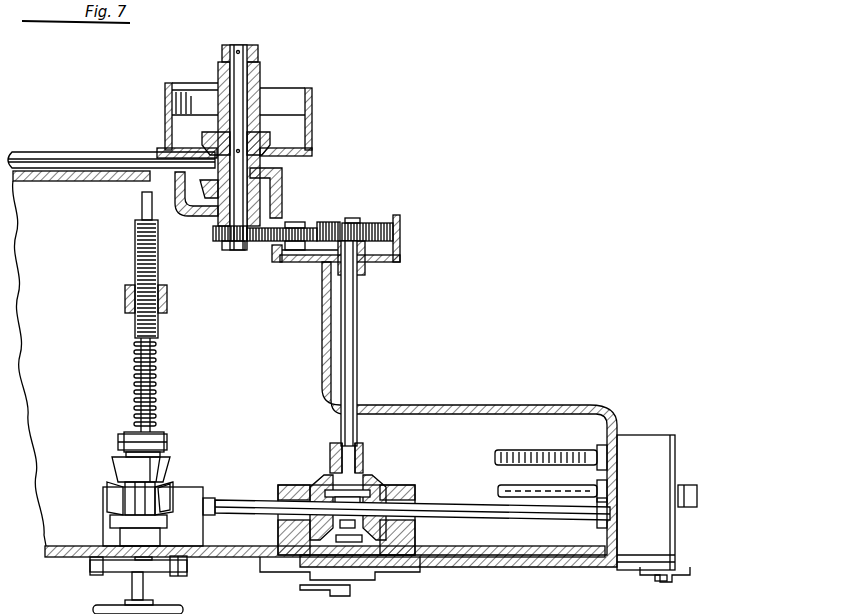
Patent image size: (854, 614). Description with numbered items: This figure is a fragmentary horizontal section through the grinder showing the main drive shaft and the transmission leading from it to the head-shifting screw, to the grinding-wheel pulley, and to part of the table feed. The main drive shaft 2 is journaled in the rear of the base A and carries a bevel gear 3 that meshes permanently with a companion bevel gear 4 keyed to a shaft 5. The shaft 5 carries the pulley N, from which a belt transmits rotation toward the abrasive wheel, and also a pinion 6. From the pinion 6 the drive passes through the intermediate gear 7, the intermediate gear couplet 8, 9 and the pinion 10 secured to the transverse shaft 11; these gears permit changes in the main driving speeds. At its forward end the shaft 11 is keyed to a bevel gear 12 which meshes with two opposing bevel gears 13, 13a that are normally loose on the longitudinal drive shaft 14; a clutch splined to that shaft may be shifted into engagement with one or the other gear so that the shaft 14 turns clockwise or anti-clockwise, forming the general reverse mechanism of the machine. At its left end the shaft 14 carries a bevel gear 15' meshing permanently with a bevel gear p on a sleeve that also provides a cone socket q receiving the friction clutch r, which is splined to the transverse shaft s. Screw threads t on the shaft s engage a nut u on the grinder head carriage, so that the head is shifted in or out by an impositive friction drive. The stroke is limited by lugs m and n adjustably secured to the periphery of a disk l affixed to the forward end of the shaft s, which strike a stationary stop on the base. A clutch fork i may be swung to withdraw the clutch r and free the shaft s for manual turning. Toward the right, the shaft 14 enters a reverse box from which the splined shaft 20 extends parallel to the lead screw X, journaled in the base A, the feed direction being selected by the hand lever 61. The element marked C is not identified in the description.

The main drive shaft 2 is at (110, 158).
The shaft 5 is at (259, 74).
The pulley N is at (312, 105).
The bevel gear 4 is at (264, 150).
The bevel gear 3 is at (183, 207).
The pinion 6 is at (214, 241).
The intermediate gear 7 is at (280, 230).
The intermediate gear couplet 9 is at (327, 223).
The pinion 10 is at (364, 222).
The intermediate gear couplet 8 is at (395, 243).
The transverse shaft 11 is at (361, 322).
The bevel gear 12 is at (364, 476).
The bevel gear 13a is at (312, 484).
The bevel gear 13 is at (386, 486).
The longitudinal drive shaft 14 is at (444, 512).
The lead screw X is at (516, 452).
The splined shaft 20 is at (538, 488).
The hand lever 61 is at (648, 568).
The screw threads t is at (135, 248).
The nut u is at (168, 299).
The transverse shaft s is at (154, 396).
The clutch fork i is at (119, 441).
The friction clutch r is at (165, 445).
The cone socket q is at (125, 468).
The clamp C is at (107, 502).
The bevel gear 15' is at (179, 487).
The bevel gear p is at (168, 520).
The disk l is at (90, 566).
The lug m is at (95, 574).
The lug n is at (185, 574).
The base A is at (247, 557).